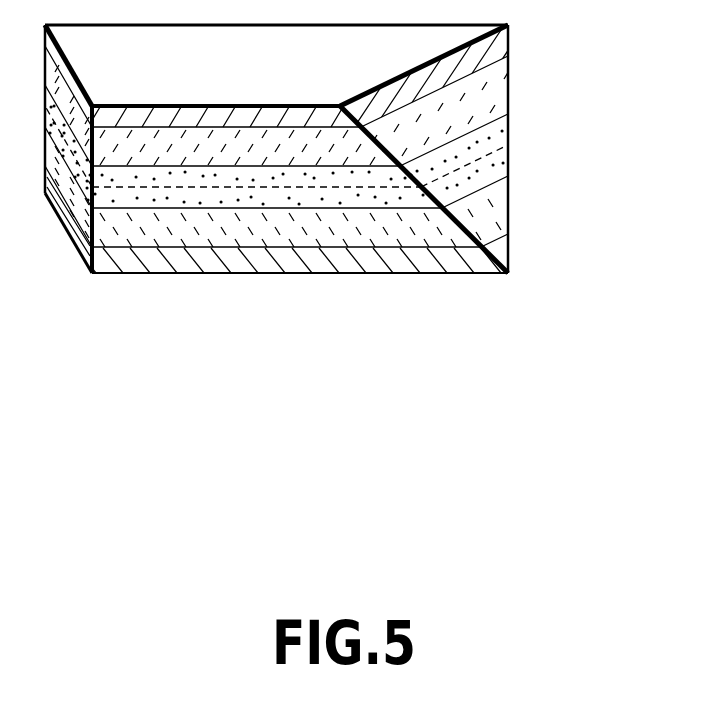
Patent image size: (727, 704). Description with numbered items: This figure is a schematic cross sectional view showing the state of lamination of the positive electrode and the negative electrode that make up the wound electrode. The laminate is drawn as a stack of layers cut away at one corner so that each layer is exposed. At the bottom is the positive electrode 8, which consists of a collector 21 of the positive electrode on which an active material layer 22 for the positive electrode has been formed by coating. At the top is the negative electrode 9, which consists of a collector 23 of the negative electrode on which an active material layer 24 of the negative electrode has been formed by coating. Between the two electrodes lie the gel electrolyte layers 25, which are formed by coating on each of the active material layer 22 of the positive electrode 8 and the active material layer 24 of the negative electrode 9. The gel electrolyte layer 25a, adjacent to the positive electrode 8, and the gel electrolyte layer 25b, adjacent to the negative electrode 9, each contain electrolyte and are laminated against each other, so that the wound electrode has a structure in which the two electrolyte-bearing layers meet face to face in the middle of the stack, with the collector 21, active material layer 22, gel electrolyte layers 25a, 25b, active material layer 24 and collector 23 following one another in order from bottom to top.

The positive electrode 8 is at (343, 209).
The negative electrode 9 is at (344, 85).
The collector of the positive electrode 21 is at (512, 250).
The active material layer for the positive electrode 22 is at (512, 208).
The collector of the negative electrode 23 is at (511, 44).
The active material layer of the negative electrode 24 is at (512, 85).
The gel electrolyte layers 25 is at (353, 149).
The gel electrolyte layer 25a is at (512, 151).
The gel electrolyte layer 25b is at (512, 120).